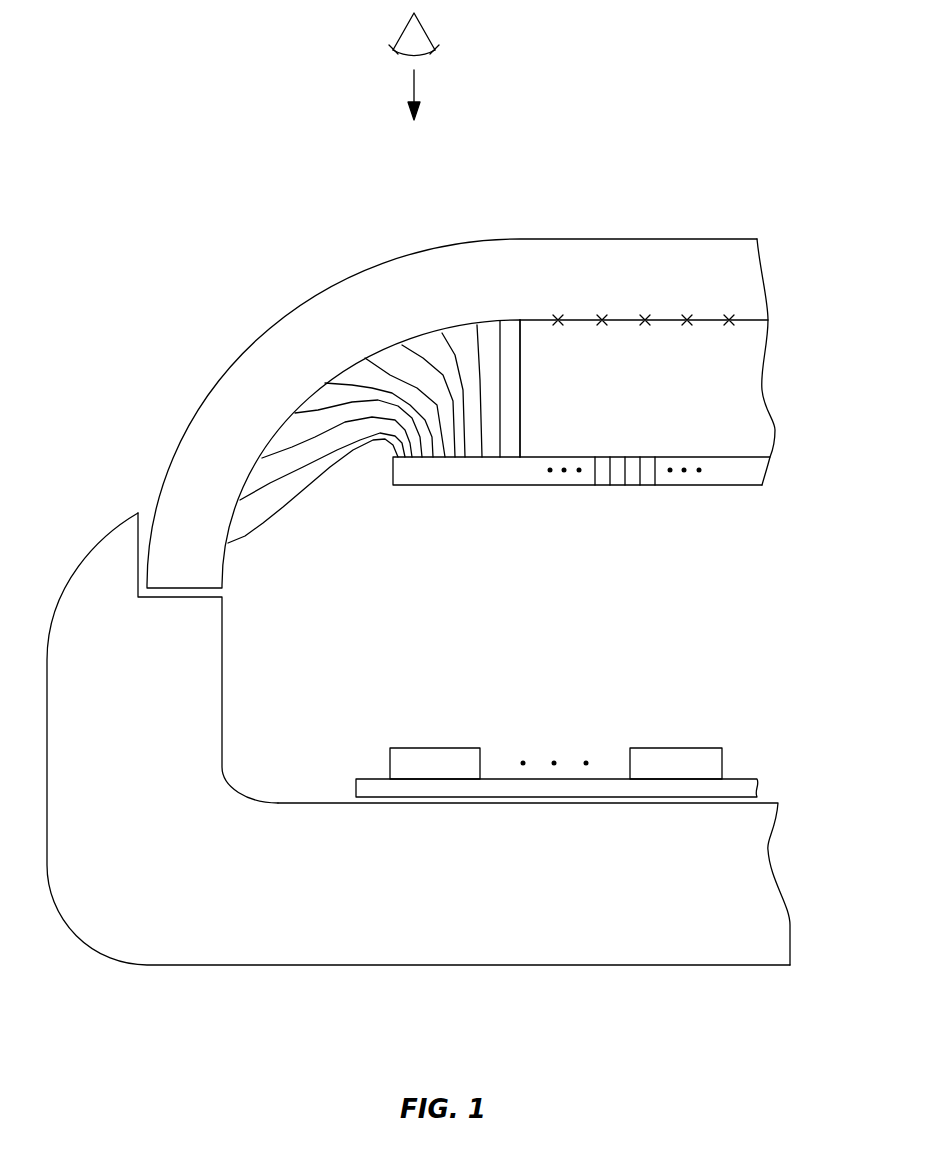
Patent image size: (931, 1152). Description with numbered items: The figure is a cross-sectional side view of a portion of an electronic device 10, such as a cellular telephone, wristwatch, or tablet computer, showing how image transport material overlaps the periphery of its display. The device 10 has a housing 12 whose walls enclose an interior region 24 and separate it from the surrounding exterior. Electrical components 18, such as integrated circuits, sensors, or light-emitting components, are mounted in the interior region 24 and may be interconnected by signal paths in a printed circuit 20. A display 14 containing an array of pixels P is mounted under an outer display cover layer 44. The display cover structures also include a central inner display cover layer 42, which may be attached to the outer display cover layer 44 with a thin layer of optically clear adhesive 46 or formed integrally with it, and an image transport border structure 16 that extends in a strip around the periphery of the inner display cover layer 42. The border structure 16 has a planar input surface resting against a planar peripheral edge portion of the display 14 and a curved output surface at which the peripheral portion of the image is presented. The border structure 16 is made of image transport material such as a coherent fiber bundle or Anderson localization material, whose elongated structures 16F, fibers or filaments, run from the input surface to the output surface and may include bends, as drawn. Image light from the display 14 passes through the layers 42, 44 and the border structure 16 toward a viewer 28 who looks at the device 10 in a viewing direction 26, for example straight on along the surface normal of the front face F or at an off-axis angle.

The electronic device 10 is at (202, 186).
The housing 12 is at (512, 948).
The display 14 is at (750, 470).
The image transport border structure 16 is at (384, 499).
The elongated structures 16F is at (357, 373).
The electrical components 18 is at (442, 748).
The printed circuit 20 is at (372, 785).
The interior region 24 is at (288, 777).
The viewing direction 26 is at (414, 88).
The viewer 28 is at (421, 27).
The inner display cover layer 42 is at (750, 395).
The outer display cover layer 44 is at (745, 283).
The adhesive 46 is at (603, 316).
The front face F is at (654, 216).
The pixels P is at (630, 487).